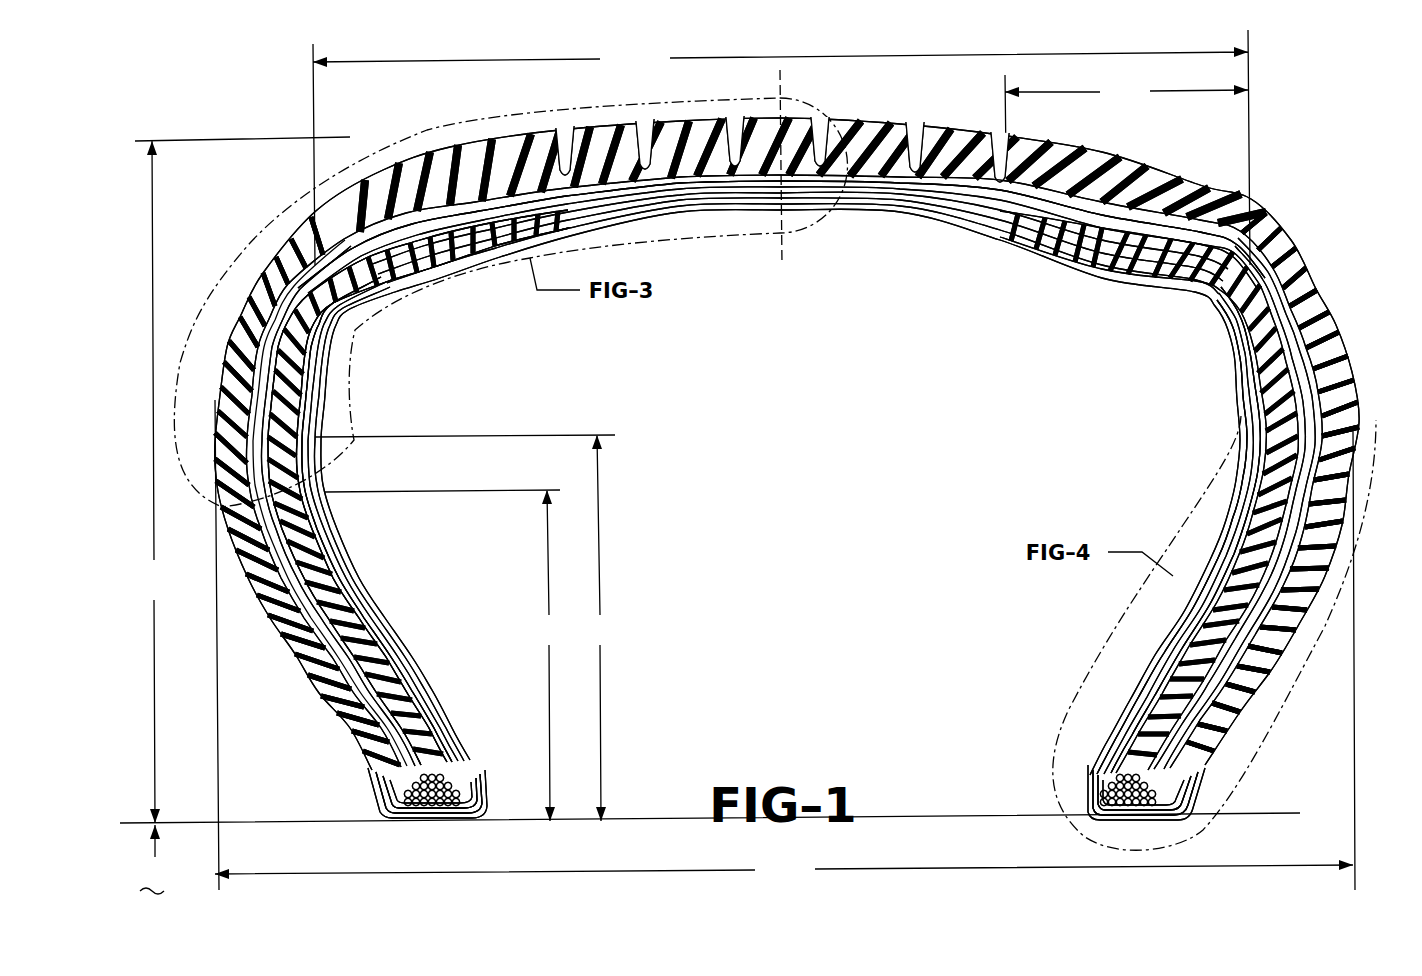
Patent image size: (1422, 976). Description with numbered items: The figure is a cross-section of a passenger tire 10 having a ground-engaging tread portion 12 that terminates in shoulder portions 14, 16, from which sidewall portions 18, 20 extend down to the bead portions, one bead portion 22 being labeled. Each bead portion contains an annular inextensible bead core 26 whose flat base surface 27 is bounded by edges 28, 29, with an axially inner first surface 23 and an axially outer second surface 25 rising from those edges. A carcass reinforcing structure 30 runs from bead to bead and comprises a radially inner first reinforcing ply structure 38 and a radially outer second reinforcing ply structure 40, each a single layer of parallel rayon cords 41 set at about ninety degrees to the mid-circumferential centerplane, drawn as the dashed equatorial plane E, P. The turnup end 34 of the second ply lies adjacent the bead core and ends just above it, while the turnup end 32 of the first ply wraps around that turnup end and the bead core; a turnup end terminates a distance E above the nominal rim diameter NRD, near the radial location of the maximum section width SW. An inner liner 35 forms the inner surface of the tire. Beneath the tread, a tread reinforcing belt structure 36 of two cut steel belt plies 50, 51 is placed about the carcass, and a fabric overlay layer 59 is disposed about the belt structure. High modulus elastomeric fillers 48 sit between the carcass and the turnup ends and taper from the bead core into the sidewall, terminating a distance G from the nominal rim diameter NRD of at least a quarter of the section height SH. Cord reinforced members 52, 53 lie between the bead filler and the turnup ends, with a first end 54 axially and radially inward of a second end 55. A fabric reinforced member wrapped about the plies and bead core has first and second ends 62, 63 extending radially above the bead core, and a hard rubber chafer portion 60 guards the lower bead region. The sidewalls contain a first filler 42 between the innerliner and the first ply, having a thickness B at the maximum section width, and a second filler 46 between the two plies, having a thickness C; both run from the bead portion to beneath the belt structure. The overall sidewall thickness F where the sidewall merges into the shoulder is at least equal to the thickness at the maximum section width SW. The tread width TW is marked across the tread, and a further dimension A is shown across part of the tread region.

The tire 10 is at (1328, 150).
The tread portion 12 is at (940, 136).
The shoulder portion 14 is at (1281, 253).
The shoulder portion 16 is at (330, 228).
The sidewall portion 18 is at (1359, 392).
The sidewall portion 20 is at (212, 375).
The bead portion 22 is at (1152, 715).
The axially inner first surface 23 is at (461, 799).
The axially outer second surface 25 is at (385, 799).
The bead core 26 is at (1122, 765).
The flat base surface 27 is at (430, 821).
The edge 28 is at (483, 826).
The edge 29 is at (381, 821).
The carcass reinforcing structure 30 is at (859, 200).
The turnup end 32 is at (1190, 718).
The turnup end 34 is at (1217, 687).
The inner liner 35 is at (365, 300).
The tread reinforcing belt structure 36 is at (875, 172).
The first reinforcing ply structure 38 is at (295, 290).
The second reinforcing ply structure 40 is at (300, 345).
The cords 41 is at (310, 540).
The first filler 42 is at (341, 600).
The second filler 46 is at (257, 476).
The elastomeric filler 48 is at (354, 635).
The belt ply 50 is at (1165, 210).
The belt ply 51 is at (1254, 232).
The axially outer component of cord reinforced member 52 is at (1268, 691).
The axially inner component of cord reinforced member 53 is at (1240, 660).
The first end 54 is at (1185, 800).
The second end 55 is at (1295, 650).
The fabric overlay layer 59 is at (1135, 192).
The chafer portion 60 is at (1210, 760).
The first end 62 is at (1129, 738).
The second end 63 is at (1190, 780).
The thickness of first filler B is at (1244, 372).
The thickness of second filler C is at (246, 383).
The overall sidewall thickness in shoulder region F is at (306, 374).
The distance E is at (558, 445).
The equatorial plane P is at (790, 168).
The tread width TW is at (781, 147).
The dimension A is at (1126, 117).
The maximum section height SH is at (710, 480).
The nominal rim diameter NRD is at (153, 859).
The distance G is at (442, 655).
The maximum section width SW is at (785, 645).